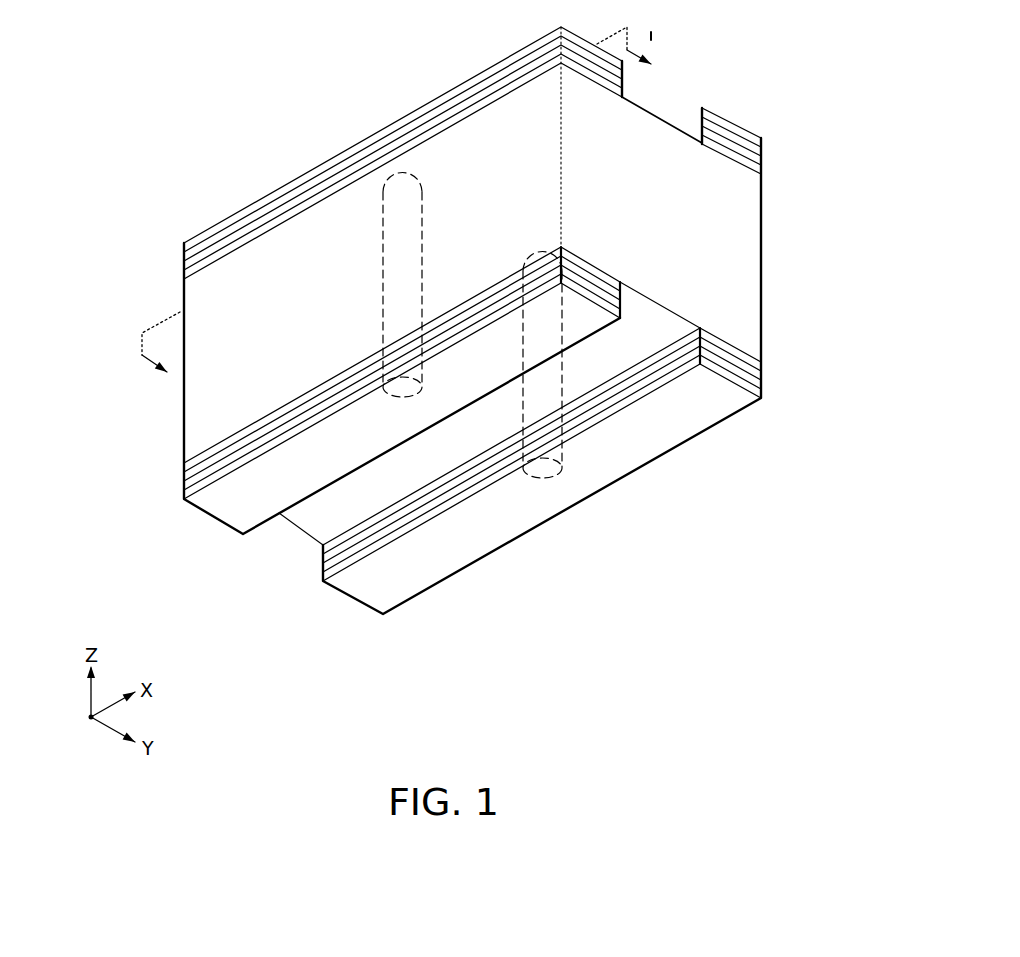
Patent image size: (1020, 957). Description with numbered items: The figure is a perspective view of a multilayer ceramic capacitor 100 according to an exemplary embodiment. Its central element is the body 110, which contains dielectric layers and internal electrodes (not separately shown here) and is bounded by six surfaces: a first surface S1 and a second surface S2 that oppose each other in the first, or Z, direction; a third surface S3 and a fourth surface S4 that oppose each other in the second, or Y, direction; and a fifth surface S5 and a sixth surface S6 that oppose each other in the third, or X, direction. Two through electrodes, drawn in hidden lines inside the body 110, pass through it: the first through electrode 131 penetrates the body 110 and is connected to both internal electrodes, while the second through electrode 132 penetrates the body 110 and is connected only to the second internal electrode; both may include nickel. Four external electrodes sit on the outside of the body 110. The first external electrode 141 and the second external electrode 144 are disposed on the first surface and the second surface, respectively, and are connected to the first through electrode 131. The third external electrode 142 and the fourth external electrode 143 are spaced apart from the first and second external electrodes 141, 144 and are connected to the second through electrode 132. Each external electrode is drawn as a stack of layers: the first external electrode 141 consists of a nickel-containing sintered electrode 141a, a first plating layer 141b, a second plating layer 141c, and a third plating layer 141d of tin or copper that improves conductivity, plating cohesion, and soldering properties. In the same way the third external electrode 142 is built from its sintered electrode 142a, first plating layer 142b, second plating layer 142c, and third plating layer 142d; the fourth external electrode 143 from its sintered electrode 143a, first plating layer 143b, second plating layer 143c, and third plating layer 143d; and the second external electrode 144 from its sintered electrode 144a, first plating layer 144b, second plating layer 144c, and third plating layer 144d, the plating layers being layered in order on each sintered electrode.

The multilayer ceramic capacitor 100 is at (277, 79).
The body 110 is at (293, 533).
The first through electrode 131 is at (402, 397).
The second through electrode 132 is at (542, 478).
The first external electrode 141 is at (93, 470).
The sintered electrode 141a is at (184, 467).
The first plating layer 141b is at (184, 476).
The second plating layer 141c is at (184, 485).
The third plating layer 141d is at (184, 494).
The third external electrode 142 is at (855, 355).
The sintered electrode 142a is at (761, 366).
The first plating layer 142b is at (761, 375).
The second plating layer 142c is at (761, 384).
The third plating layer 142d is at (761, 393).
The fourth external electrode 143 is at (855, 105).
The sintered electrode 143a is at (761, 169).
The first plating layer 143b is at (761, 160).
The second plating layer 143c is at (761, 150).
The third plating layer 143d is at (761, 141).
The second external electrode 144 is at (93, 208).
The sintered electrode 144a is at (184, 275).
The first plating layer 144b is at (184, 265).
The second plating layer 144c is at (184, 256).
The third plating layer 144d is at (184, 246).
The first surface S1 is at (317, 233).
The second surface S2 is at (377, 486).
The third surface S3 is at (263, 266).
The fourth surface S4 is at (665, 408).
The fifth surface S5 is at (253, 497).
The sixth surface S6 is at (637, 157).